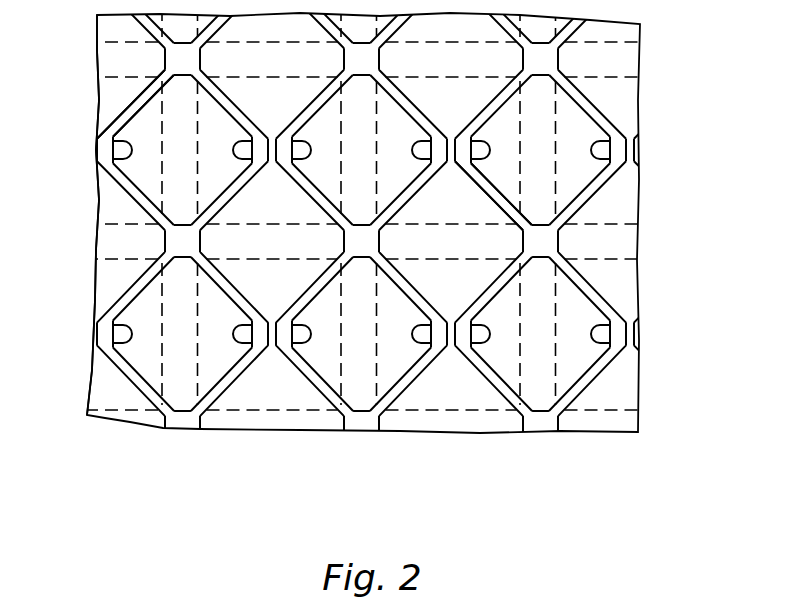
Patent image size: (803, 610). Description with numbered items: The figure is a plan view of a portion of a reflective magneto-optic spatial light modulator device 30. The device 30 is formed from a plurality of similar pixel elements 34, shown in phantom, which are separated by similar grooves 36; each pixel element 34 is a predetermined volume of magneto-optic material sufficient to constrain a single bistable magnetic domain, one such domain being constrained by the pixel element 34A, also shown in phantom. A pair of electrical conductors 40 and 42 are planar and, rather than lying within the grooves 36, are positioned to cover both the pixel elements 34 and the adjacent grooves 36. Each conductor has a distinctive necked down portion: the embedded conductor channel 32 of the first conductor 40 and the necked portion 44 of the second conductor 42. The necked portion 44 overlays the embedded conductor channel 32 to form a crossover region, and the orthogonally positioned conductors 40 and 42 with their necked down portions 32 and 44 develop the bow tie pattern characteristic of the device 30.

The magneto-optic spatial light modulator device 30 is at (581, 448).
The embedded conductor channel 32 is at (495, 143).
The pixel elements 34 is at (612, 259).
The pixel element 34A is at (524, 207).
The grooves 36 is at (103, 244).
The first electrical conductor 40 is at (126, 134).
The second electrical conductor 42 is at (446, 413).
The necked portion 44 is at (272, 348).